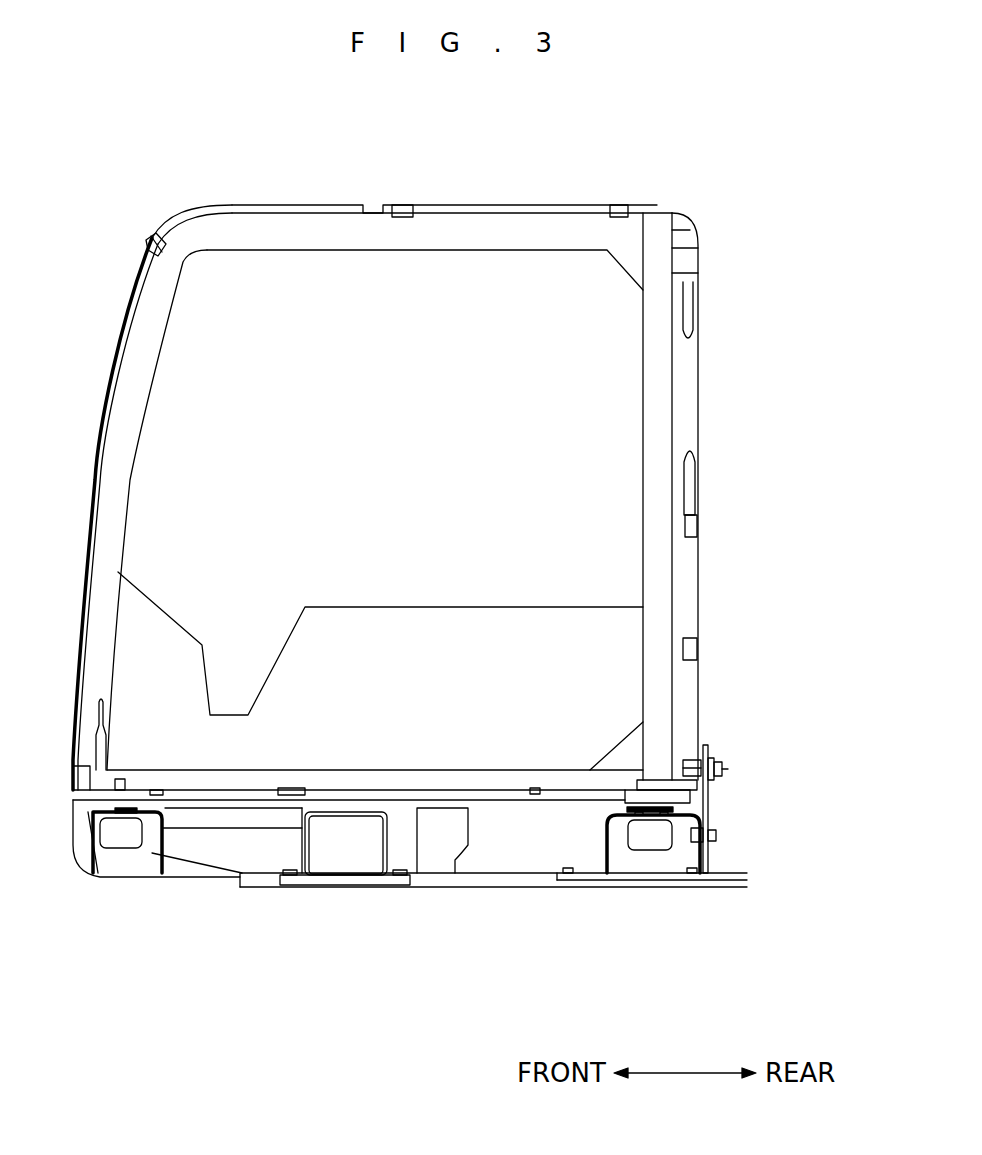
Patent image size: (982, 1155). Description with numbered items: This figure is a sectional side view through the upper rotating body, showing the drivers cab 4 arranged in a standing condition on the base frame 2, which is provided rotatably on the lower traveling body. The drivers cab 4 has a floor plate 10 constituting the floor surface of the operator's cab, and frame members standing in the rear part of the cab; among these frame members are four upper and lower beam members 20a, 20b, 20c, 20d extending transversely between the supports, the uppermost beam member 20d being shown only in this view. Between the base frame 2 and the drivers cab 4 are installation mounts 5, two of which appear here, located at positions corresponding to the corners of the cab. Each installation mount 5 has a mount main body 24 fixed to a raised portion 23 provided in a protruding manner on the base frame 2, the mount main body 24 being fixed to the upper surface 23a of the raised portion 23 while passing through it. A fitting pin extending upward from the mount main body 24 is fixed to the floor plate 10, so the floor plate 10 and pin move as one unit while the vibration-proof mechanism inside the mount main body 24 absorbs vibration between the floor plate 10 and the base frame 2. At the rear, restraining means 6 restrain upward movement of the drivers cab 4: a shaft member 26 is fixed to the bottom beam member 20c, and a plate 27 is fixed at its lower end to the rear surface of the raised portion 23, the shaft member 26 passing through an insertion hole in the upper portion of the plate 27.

The base frame 2 is at (435, 888).
The drivers cab 4 is at (168, 188).
The installation mount 5 is at (140, 850).
The restraining means 6 is at (750, 740).
The floor plate 10 is at (382, 788).
The beam member 20a is at (700, 525).
The beam member 20b is at (690, 638).
The beam member 20c is at (685, 764).
The beam member 20d is at (700, 262).
The raised portion 23 is at (605, 840).
The upper surface 23a is at (620, 814).
The mount main body 24 is at (115, 840).
The shaft member 26 is at (728, 772).
The plate 27 is at (716, 829).